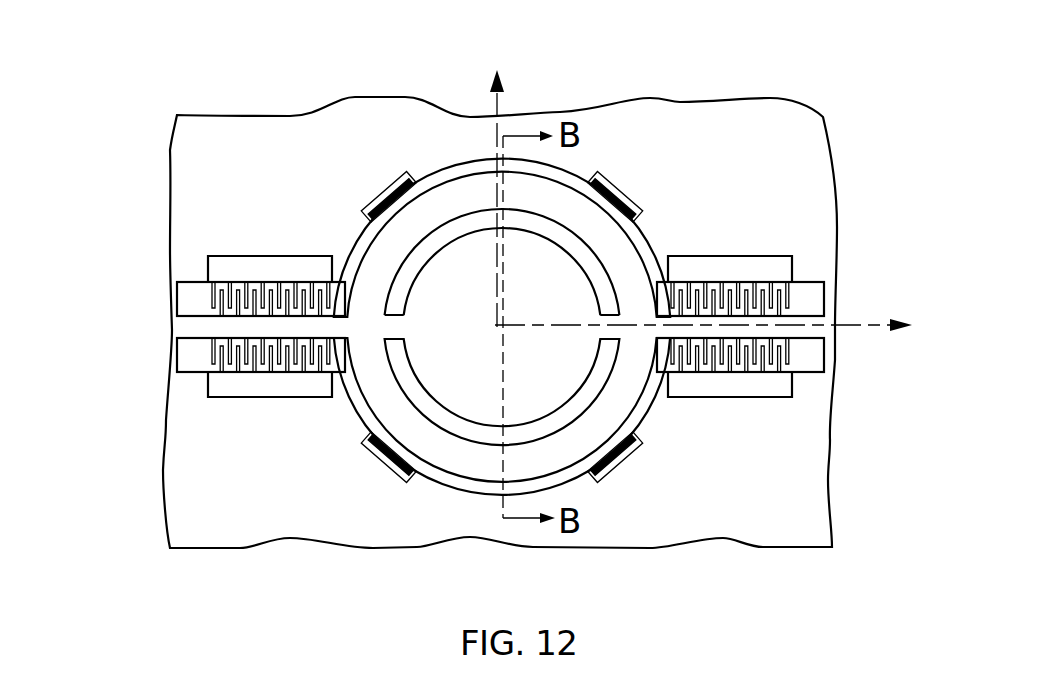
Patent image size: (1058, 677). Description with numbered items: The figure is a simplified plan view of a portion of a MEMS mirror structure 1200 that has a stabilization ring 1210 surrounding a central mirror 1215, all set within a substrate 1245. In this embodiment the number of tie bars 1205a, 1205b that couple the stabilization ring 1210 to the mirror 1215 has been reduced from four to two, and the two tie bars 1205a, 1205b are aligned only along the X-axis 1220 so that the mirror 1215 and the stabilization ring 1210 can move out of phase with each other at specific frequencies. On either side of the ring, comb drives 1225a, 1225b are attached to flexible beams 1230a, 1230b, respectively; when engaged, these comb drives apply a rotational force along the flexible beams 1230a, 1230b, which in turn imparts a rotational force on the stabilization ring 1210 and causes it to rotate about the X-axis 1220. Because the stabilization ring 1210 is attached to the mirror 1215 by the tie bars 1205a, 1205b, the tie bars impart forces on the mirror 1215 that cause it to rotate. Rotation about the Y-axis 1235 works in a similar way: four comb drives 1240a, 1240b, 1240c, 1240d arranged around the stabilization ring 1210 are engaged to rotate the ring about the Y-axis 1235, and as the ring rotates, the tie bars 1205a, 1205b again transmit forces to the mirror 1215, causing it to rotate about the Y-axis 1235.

The MEMS mirror structure 1200 is at (154, 84).
The tie bar 1205a is at (390, 323).
The tie bar 1205b is at (610, 323).
The stabilization ring 1210 is at (613, 398).
The mirror 1215 is at (475, 345).
The X-axis 1220 is at (858, 330).
The comb drive 1225a is at (245, 362).
The comb drive 1225b is at (743, 357).
The flexible beam 1230a is at (258, 328).
The flexible beam 1230b is at (762, 322).
The Y-axis 1235 is at (497, 102).
The comb drive 1240a is at (385, 193).
The comb drive 1240b is at (610, 197).
The comb drive 1240c is at (370, 447).
The comb drive 1240d is at (620, 457).
The substrate 1245 is at (768, 172).